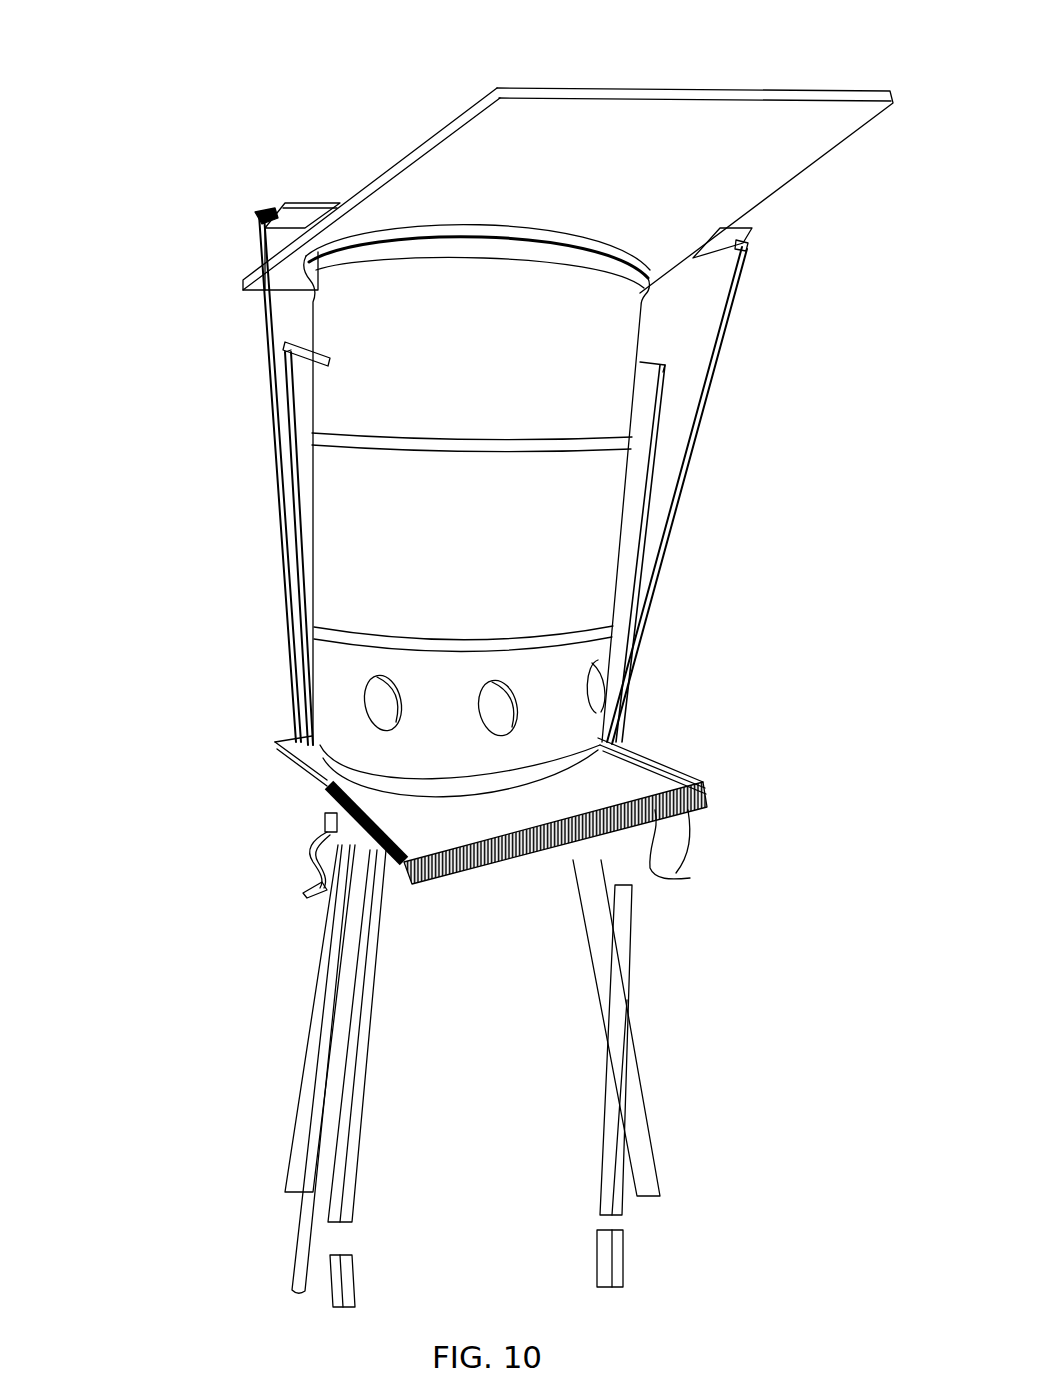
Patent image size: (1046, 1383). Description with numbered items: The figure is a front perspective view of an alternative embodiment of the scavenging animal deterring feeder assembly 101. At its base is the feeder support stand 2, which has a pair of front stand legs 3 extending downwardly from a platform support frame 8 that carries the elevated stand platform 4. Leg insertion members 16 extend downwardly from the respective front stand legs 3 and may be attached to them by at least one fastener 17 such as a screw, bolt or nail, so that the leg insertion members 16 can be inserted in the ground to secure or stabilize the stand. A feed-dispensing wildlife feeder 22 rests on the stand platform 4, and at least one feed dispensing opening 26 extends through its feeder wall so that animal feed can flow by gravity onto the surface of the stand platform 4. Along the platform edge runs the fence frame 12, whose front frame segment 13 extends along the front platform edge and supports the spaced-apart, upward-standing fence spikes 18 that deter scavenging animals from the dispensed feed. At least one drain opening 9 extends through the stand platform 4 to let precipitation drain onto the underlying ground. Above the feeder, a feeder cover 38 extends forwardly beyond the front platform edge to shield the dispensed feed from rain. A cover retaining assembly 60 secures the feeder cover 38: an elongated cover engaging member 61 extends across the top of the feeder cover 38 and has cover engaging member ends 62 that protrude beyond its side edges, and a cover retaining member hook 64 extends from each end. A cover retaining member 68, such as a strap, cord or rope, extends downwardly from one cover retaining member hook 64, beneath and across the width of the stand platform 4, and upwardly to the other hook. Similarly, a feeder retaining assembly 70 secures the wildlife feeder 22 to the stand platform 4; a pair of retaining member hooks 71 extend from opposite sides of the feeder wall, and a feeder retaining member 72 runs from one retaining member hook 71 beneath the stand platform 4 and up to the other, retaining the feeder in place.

The scavenging animal deterring feeder assembly 101 is at (204, 232).
The feeder cover 38 is at (622, 92).
The cover engaging member 61 is at (320, 205).
The cover retaining assembly 60 is at (314, 184).
The cover engaging member ends 62 is at (268, 208).
The cover retaining member hook 64 is at (265, 212).
The cover retaining member 68 is at (268, 312).
The feeder retaining assembly 70 is at (280, 372).
The stand platform 4 is at (283, 724).
The feed-dispensing wildlife feeder 22 is at (296, 408).
The feeder retaining member 72 is at (298, 512).
The retaining member hooks 71 is at (645, 355).
The feed dispensing opening 26 is at (370, 693).
The feeder support stand 2 is at (252, 826).
The fence frame 12 is at (450, 890).
The front frame segment 13 is at (530, 868).
The drain opening 9 is at (420, 848).
The fence spikes 18 is at (660, 840).
The platform support frame 8 is at (320, 890).
The stand legs 3 is at (340, 1094).
The fastener 17 is at (337, 1020).
The leg insertion members 16 is at (345, 1278).